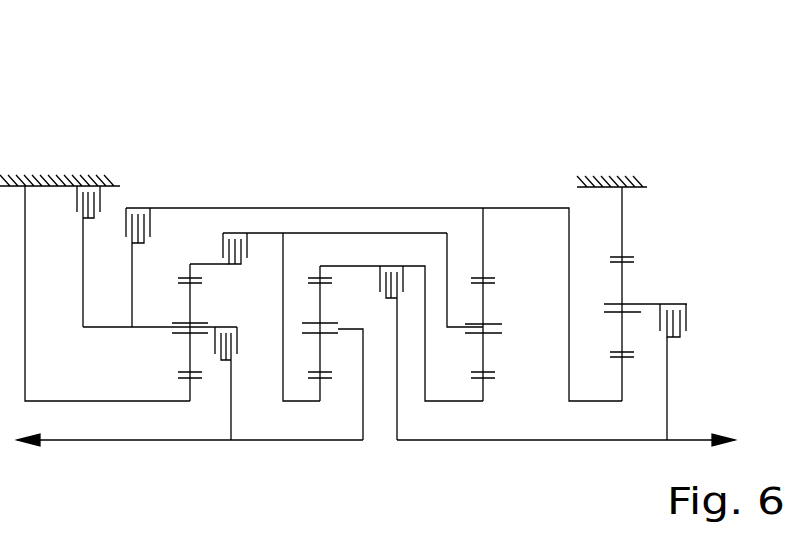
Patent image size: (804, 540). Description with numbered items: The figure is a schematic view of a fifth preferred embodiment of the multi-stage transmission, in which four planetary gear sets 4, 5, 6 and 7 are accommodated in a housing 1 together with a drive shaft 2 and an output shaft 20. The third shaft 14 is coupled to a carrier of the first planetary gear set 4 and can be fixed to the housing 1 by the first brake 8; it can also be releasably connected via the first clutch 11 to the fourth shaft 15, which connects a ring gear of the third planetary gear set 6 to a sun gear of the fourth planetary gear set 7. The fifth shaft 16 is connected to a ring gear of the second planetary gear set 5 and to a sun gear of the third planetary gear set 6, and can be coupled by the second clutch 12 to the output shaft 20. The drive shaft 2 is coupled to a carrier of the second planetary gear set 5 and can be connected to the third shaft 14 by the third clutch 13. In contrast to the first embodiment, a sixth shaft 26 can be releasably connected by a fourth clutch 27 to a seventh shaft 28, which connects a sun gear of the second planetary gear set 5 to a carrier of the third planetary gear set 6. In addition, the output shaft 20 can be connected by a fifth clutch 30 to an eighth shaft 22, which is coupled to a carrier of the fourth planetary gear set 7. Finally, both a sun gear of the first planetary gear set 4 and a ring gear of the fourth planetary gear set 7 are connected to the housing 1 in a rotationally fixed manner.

The housing 1 is at (88, 182).
The drive shaft 2 is at (135, 442).
The first planetary gear set 4 is at (193, 163).
The second planetary gear set 5 is at (322, 163).
The third planetary gear set 6 is at (484, 163).
The fourth planetary gear set 7 is at (624, 163).
The first brake 8 is at (77, 184).
The first clutch 11 is at (137, 215).
The second clutch 12 is at (393, 267).
The third clutch 13 is at (228, 345).
The third shaft 14 is at (80, 310).
The fourth shaft 15 is at (500, 208).
The fifth shaft 16 is at (455, 403).
The output shaft 20 is at (667, 375).
The eighth shaft 22 is at (652, 305).
The sixth shaft 26 is at (212, 263).
The fourth clutch 27 is at (248, 245).
The seventh shaft 28 is at (362, 233).
The fifth clutch 30 is at (663, 328).